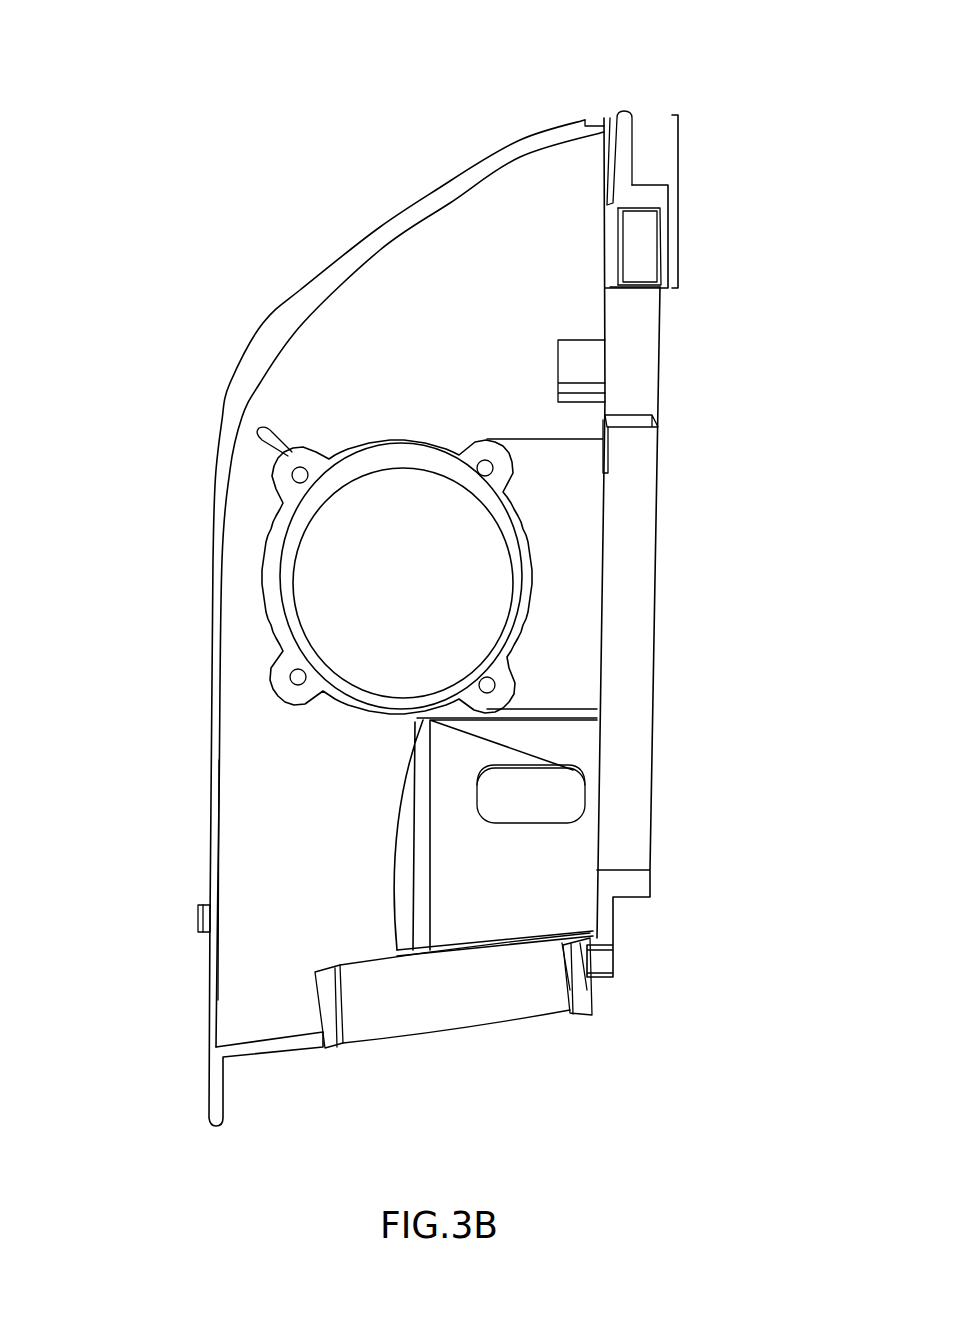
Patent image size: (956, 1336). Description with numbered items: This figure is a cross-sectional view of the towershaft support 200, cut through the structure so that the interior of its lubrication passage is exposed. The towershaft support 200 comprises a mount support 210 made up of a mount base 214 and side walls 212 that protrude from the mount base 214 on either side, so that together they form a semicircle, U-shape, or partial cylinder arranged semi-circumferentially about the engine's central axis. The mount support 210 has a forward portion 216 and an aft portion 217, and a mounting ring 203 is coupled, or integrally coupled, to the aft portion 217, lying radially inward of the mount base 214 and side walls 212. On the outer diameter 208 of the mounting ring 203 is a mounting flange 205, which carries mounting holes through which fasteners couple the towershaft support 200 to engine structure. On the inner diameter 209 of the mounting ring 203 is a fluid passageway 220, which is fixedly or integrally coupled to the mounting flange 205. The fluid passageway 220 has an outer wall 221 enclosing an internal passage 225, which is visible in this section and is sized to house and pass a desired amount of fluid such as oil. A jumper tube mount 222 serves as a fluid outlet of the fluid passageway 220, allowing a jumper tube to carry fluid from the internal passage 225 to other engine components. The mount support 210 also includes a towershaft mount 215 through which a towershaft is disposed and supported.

The towershaft support 200 is at (265, 226).
The mounting ring 203 is at (678, 185).
The mounting flange 205 is at (628, 150).
The outer diameter 208 is at (620, 110).
The inner diameter 209 is at (637, 293).
The mount support 210 is at (332, 341).
The side walls 212 is at (380, 230).
The mount base 214 is at (242, 838).
The towershaft mount 215 is at (265, 553).
The forward portion 216 is at (202, 877).
The aft portion 217 is at (656, 780).
The fluid passageway 220 is at (612, 270).
The outer wall 221 is at (655, 290).
The jumper tube mount 222 is at (587, 388).
The internal passage 225 is at (632, 243).